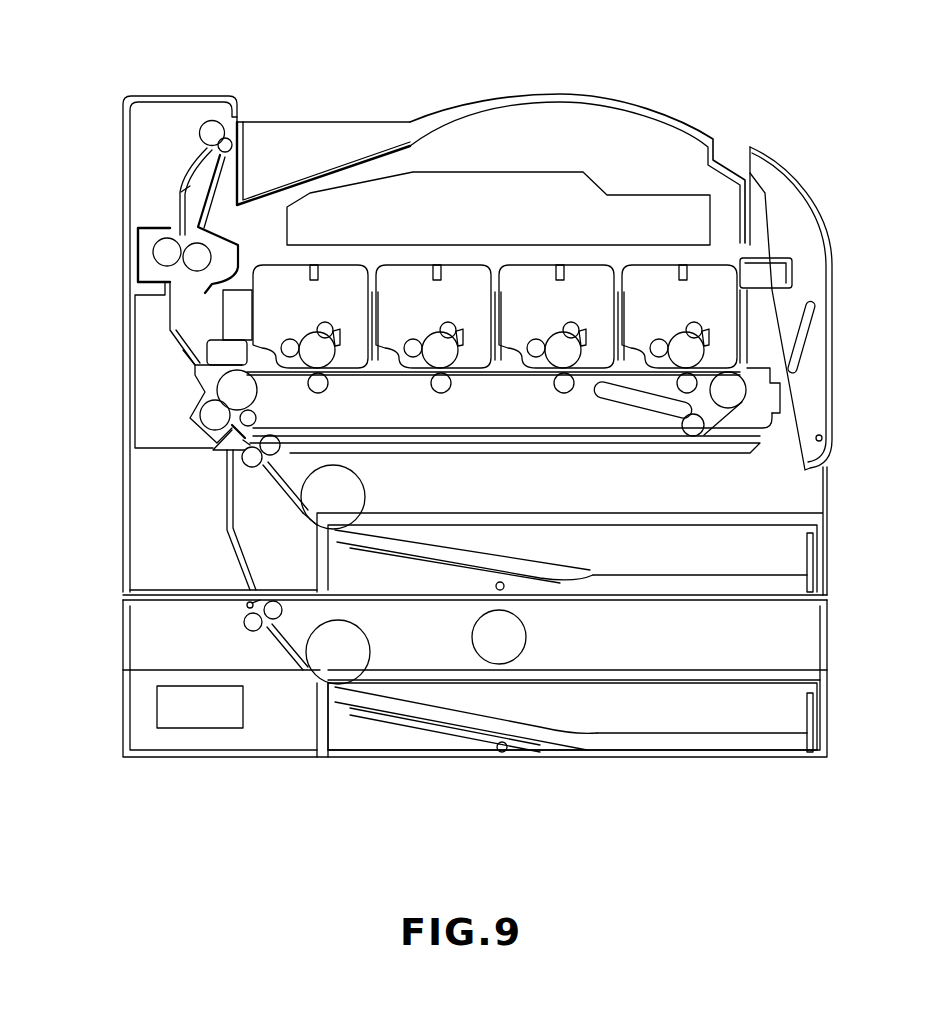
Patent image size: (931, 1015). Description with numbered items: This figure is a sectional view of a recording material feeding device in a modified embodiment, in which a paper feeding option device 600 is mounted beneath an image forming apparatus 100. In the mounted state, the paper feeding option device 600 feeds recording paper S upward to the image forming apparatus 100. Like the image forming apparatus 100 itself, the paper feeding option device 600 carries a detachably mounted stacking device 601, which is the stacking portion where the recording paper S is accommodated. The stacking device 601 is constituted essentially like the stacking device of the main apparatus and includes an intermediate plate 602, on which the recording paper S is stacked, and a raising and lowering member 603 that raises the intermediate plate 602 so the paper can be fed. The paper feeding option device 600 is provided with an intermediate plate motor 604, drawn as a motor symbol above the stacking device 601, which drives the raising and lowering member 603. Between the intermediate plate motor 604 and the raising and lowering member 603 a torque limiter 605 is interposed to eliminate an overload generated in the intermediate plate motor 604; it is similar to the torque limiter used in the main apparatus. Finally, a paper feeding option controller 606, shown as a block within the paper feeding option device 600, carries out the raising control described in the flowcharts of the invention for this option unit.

The image forming apparatus 100 is at (463, 118).
The paper feeding option device 600 is at (123, 668).
The stacking device 601 is at (572, 717).
The intermediate plate 602 is at (472, 733).
The raising and lowering member 603 is at (410, 733).
The intermediate plate motor 604 is at (527, 634).
The torque limiter 605 is at (503, 752).
The paper feeding option controller 606 is at (200, 707).
The recording paper S is at (653, 745).